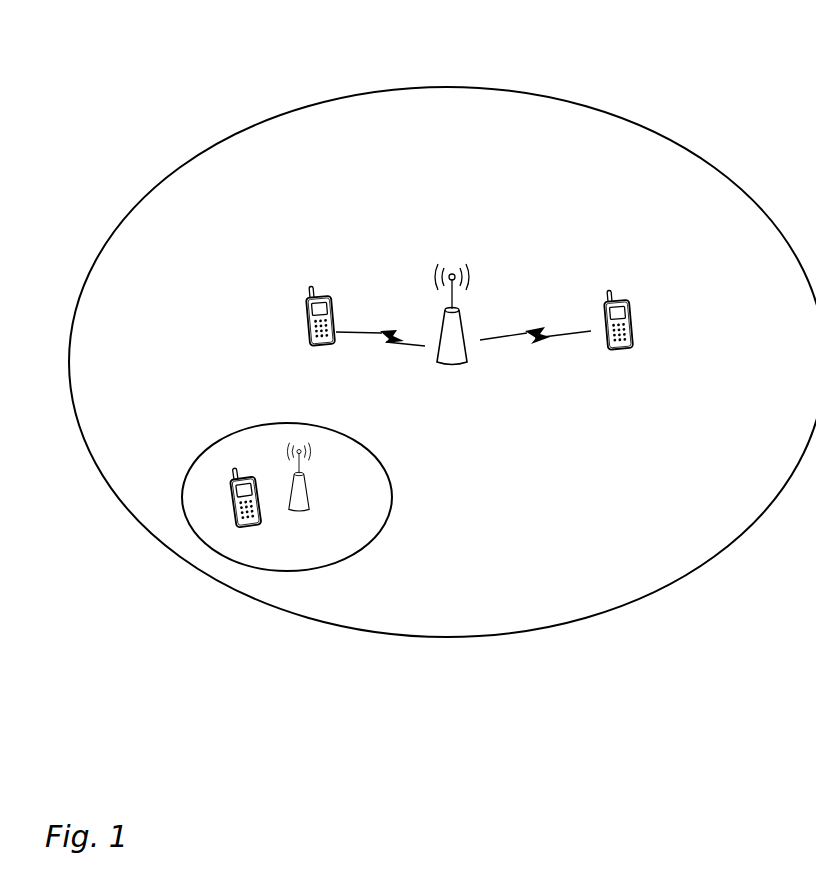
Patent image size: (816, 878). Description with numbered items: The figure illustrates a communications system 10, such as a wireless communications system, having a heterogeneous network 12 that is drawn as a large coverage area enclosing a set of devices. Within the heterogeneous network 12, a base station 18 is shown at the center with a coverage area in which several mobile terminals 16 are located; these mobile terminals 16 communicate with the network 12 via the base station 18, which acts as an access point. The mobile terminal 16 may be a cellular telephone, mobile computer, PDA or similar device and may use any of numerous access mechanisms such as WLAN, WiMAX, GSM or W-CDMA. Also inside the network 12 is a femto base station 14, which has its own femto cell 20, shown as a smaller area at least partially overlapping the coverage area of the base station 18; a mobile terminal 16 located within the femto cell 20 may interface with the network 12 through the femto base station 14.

The communications system 10 is at (694, 54).
The heterogeneous network 12 is at (337, 100).
The femto base station 14 is at (307, 481).
The mobile terminal 16 is at (317, 291).
The base station 18 is at (462, 308).
The femto cell 20 is at (392, 483).